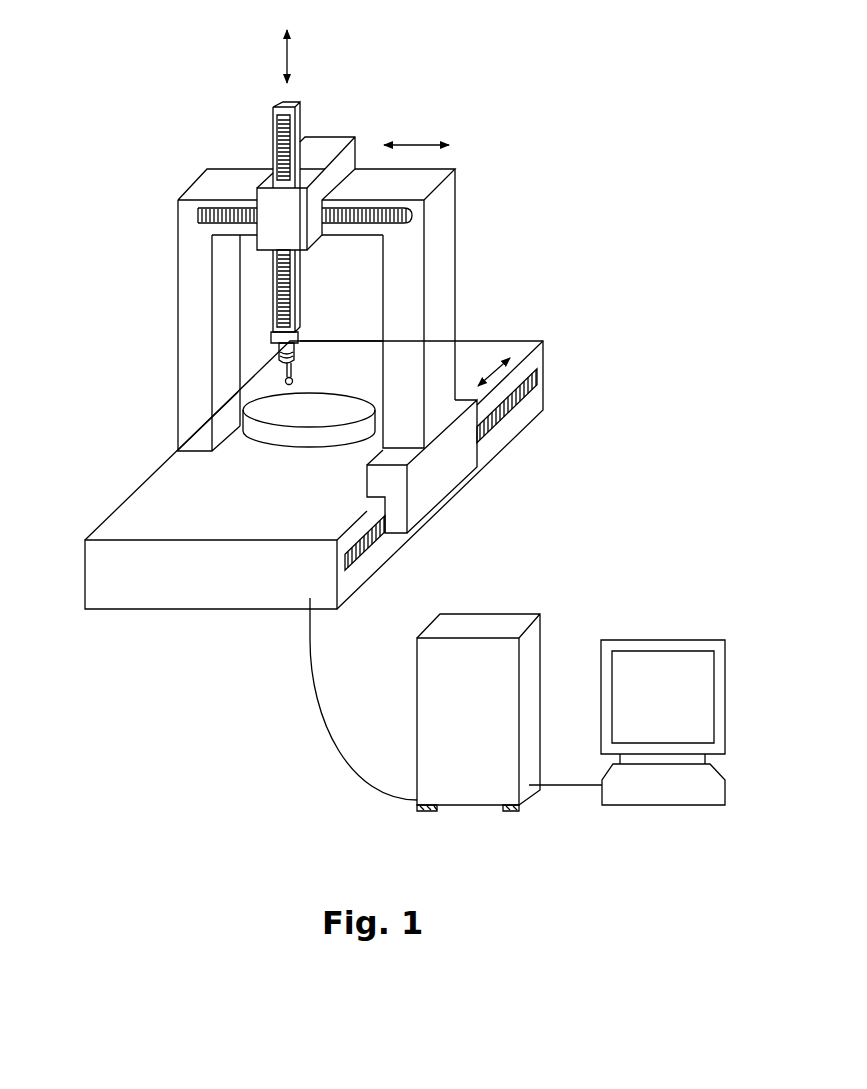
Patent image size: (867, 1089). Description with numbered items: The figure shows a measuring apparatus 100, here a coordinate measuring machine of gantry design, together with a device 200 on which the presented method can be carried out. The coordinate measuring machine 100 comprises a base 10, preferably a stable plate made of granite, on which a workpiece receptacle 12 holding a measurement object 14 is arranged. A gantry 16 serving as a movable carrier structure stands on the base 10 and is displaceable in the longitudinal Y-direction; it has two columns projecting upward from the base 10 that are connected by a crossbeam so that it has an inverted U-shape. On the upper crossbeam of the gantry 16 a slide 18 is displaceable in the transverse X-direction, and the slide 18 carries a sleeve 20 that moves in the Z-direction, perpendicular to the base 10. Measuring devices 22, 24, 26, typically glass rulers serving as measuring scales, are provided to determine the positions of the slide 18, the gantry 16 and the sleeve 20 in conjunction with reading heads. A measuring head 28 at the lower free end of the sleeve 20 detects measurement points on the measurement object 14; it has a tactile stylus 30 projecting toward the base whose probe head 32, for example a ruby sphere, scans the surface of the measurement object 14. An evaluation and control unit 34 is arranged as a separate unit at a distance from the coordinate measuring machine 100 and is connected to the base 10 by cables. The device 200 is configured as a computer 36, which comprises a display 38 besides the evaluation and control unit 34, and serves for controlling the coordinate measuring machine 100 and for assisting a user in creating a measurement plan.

The measuring apparatus 100 is at (478, 144).
The base 10 is at (135, 525).
The workpiece receptacle 12 is at (246, 451).
The measurement object 14 is at (308, 437).
The gantry 16 is at (193, 282).
The slide 18 is at (263, 184).
The sleeve 20 is at (282, 102).
The measuring device 22 is at (412, 217).
The measuring device 24 is at (512, 408).
The measuring device 26 is at (293, 135).
The measuring head 28 is at (302, 348).
The tactile stylus 30 is at (283, 370).
The probe head 32 is at (300, 379).
The evaluation and control unit 34 is at (475, 625).
The computer 36 is at (695, 640).
The display 38 is at (638, 677).
The device 200 is at (684, 832).